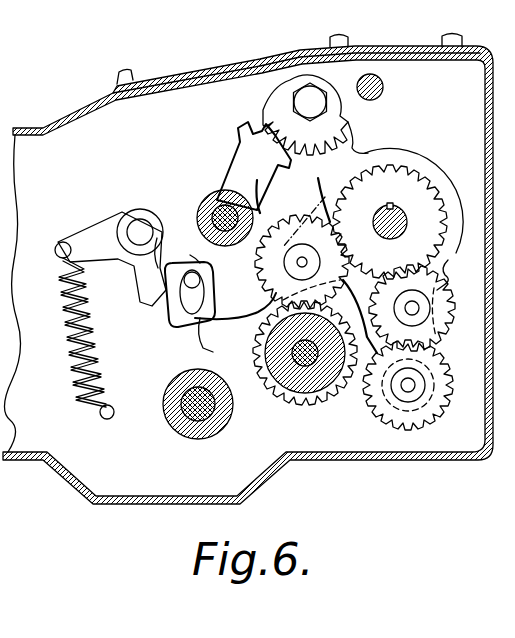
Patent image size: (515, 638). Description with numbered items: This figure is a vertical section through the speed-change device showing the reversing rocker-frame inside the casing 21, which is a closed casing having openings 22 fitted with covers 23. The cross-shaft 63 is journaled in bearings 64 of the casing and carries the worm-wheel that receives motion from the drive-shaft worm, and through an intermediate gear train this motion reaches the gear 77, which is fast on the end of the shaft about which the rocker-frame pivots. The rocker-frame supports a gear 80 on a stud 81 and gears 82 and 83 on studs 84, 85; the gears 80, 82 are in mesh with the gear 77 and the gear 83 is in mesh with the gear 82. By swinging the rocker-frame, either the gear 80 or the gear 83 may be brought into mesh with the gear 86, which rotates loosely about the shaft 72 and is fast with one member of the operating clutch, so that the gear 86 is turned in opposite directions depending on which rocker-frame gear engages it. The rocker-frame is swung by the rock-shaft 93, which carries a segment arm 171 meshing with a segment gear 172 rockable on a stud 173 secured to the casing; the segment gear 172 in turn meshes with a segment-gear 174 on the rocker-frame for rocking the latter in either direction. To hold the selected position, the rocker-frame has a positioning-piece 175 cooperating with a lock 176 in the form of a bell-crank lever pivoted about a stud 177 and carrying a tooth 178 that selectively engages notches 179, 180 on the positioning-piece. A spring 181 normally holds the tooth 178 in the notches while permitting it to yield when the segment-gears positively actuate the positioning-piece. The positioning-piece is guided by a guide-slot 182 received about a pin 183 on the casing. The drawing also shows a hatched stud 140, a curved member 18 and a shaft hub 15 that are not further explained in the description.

The casing 21 is at (80, 100).
The openings 22 is at (143, 80).
The covers 23 is at (217, 60).
The segment gear 172 is at (280, 105).
The stud 173 is at (315, 95).
The stud 140 is at (385, 88).
The segment-gear 174 is at (365, 150).
The ratchet disc 18 is at (404, 156).
The gear 77 is at (428, 192).
The shaft hub 15 is at (402, 220).
The gear 80 is at (305, 200).
The stud 81 is at (300, 262).
The rock-shaft 93 is at (215, 208).
The segment arm 171 is at (245, 167).
The stud 177 is at (138, 230).
The lock 176 is at (145, 285).
The tooth 178 is at (171, 249).
The notch 179 is at (203, 253).
The notch 180 is at (172, 305).
The pin 183 is at (204, 286).
The guide-slot 182 is at (188, 339).
The positioning-piece 175 is at (216, 318).
The spring 181 is at (100, 383).
The cross-shaft 63 is at (190, 407).
The bearings 64 is at (196, 427).
The shaft 72 is at (290, 404).
The gear 86 is at (320, 400).
The gear 82 is at (414, 307).
The stud 84 is at (449, 270).
The stud 85 is at (412, 386).
The gear 83 is at (445, 362).